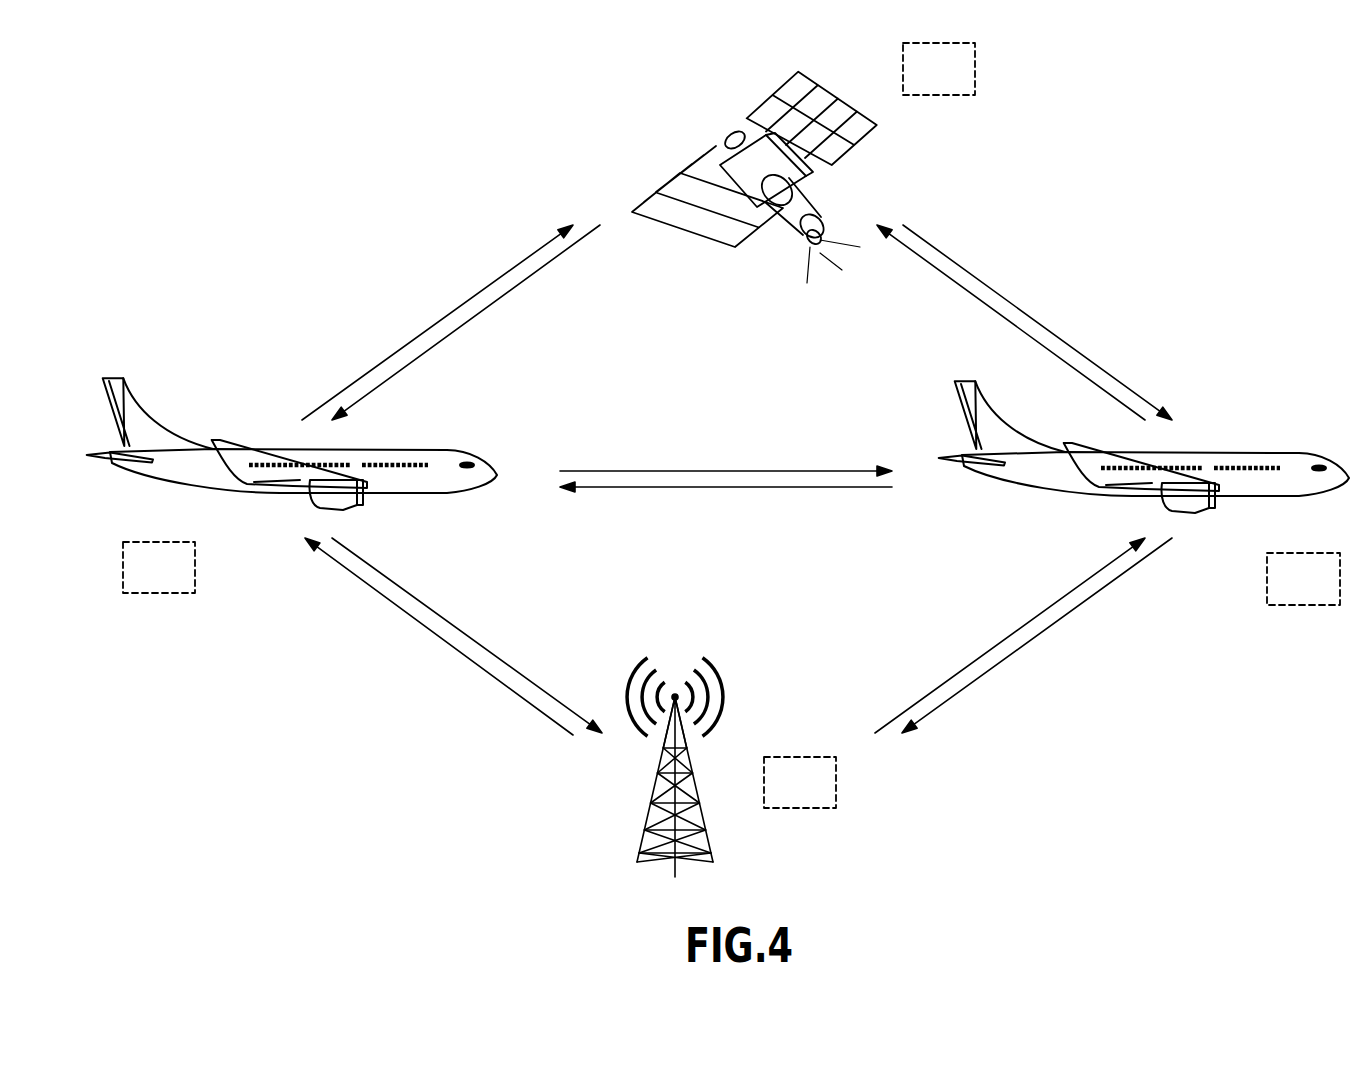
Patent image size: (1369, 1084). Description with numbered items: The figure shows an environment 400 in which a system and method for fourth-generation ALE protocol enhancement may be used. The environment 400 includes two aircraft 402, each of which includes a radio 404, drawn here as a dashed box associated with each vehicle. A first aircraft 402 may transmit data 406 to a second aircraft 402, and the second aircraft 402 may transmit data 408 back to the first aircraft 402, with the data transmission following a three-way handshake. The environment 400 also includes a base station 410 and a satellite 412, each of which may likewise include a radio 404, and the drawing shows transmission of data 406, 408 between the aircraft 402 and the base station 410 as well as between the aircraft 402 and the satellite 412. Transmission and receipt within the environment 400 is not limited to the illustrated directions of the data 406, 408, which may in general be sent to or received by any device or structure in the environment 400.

The environment 400 is at (292, 118).
The aircraft 402 is at (112, 377).
The radio 404 is at (857, 87).
The data 406 is at (450, 313).
The data 408 is at (461, 324).
The base station 410 is at (651, 801).
The satellite 412 is at (732, 132).